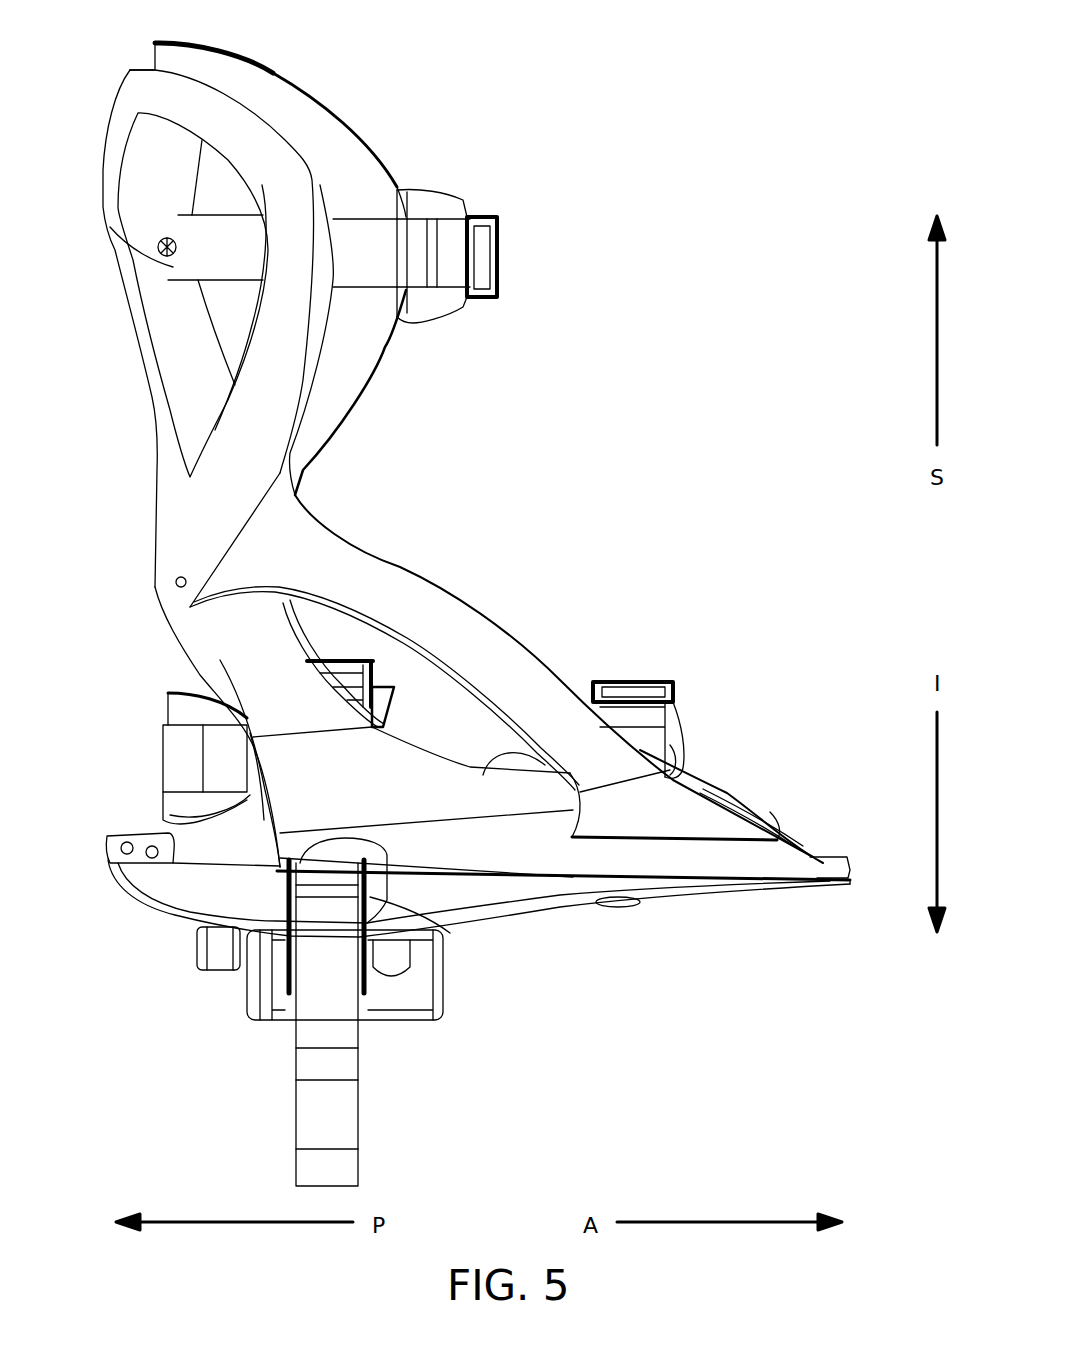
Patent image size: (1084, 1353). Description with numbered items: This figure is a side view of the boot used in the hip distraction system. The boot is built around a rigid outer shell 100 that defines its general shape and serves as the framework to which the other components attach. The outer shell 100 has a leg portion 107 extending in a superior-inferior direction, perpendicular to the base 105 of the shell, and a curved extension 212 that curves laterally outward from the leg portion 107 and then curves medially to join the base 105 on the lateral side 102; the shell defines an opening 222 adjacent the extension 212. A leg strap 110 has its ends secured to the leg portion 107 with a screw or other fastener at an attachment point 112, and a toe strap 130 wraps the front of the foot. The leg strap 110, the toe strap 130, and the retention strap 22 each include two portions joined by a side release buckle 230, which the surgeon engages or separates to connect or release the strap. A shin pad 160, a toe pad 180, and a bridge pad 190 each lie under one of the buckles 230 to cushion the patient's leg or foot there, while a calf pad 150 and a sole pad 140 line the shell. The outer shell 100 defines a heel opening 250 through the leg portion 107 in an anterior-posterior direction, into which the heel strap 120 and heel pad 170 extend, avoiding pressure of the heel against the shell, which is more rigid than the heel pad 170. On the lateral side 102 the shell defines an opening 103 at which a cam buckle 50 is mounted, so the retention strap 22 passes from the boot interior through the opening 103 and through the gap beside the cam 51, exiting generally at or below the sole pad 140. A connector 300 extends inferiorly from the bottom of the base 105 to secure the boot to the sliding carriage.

The outer shell 100 is at (150, 85).
The calf pad 150 is at (265, 90).
The attachment point 112 is at (108, 226).
The leg portion 107 is at (150, 397).
The leg strap 110 is at (385, 347).
The shin pad 160 is at (433, 310).
The buckle 230 is at (497, 245).
The curved extension 212 is at (433, 597).
The heel opening 250 is at (170, 668).
The heel pad 170 is at (168, 705).
The heel strap 120 is at (175, 755).
The opening 222 is at (371, 663).
The bridge pad 190 is at (393, 706).
The toe strap 130 is at (647, 735).
The toe pad 180 is at (673, 750).
The sole pad 140 is at (840, 852).
The cam 51 is at (334, 868).
The opening 103 is at (395, 862).
The base 105 is at (735, 893).
The lateral side 102 is at (610, 848).
The cam buckle 50 is at (370, 897).
The connector 300 is at (435, 995).
The retention strap 22 is at (358, 1106).